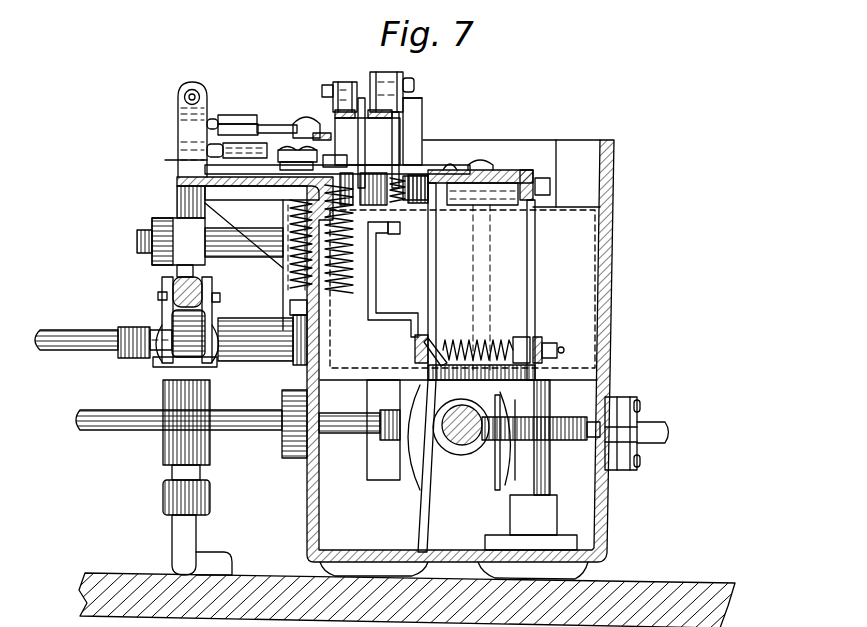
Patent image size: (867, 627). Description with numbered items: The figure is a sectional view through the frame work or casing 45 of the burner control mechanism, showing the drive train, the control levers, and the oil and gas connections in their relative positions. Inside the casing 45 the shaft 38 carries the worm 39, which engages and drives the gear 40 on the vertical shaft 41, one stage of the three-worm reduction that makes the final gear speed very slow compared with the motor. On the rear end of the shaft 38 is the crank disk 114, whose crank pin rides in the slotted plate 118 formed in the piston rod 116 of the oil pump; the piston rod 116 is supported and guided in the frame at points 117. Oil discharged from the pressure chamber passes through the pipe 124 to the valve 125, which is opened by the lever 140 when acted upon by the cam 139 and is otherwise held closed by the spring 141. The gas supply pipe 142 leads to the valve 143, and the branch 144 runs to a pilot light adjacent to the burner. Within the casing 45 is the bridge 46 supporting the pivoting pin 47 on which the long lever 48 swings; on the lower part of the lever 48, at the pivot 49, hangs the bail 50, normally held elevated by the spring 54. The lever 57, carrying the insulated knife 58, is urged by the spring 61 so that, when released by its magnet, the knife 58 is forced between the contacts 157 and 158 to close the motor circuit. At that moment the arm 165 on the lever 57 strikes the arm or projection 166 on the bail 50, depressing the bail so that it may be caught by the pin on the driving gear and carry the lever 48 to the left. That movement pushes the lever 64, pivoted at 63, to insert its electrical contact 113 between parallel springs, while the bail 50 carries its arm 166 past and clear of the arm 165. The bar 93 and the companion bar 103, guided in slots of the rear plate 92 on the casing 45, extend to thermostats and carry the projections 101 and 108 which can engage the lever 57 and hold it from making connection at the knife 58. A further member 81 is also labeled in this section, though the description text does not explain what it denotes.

The shaft 38 is at (445, 440).
The worm 39 is at (480, 462).
The gear 40 is at (560, 422).
The vertical shaft 41 is at (585, 472).
The frame work or casing 45 is at (648, 323).
The bridge 46 is at (577, 225).
The pivoting pin 47 is at (533, 142).
The long lever 48 is at (536, 248).
The pivot 49 is at (567, 336).
The bail 50 is at (430, 337).
The spring 54 is at (500, 338).
The lever 57 is at (178, 168).
The insulated knife 58 is at (215, 146).
The spring 61 is at (335, 312).
The pivot 63 is at (290, 307).
The lever 64 is at (308, 107).
The bracket 81 is at (436, 216).
The plate 92 is at (452, 115).
The bar 93 is at (347, 88).
The projection 101 is at (366, 134).
The bar 103 is at (396, 111).
The projection 108 is at (457, 137).
The electrical contact 113 is at (256, 90).
The crank disk 114 is at (420, 445).
The piston rod 116 is at (139, 395).
The guide points 117 is at (288, 284).
The slotted plate 118 is at (407, 452).
The pipe 124 is at (247, 544).
The valve 125 is at (178, 450).
The cam 139 is at (185, 235).
The lever 140 is at (177, 268).
The spring 141 is at (160, 273).
The gas supply pipe 142 is at (80, 337).
The valve 143 is at (244, 350).
The branch 144 is at (266, 280).
The contact 157 is at (175, 165).
The contact 158 is at (213, 140).
The arm 165 is at (428, 222).
The arm or projection 166 is at (370, 285).